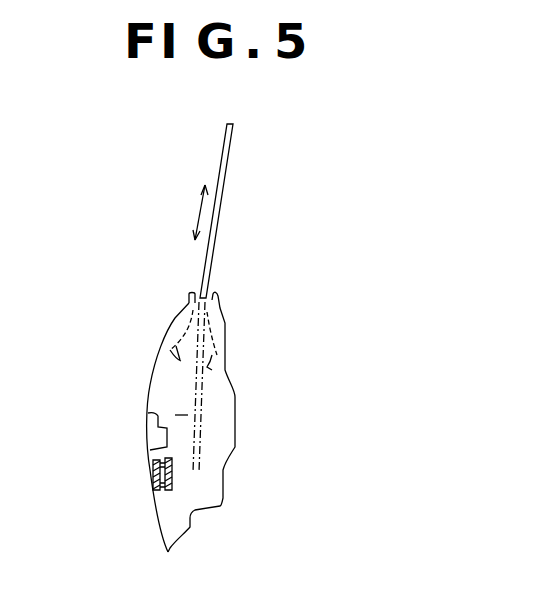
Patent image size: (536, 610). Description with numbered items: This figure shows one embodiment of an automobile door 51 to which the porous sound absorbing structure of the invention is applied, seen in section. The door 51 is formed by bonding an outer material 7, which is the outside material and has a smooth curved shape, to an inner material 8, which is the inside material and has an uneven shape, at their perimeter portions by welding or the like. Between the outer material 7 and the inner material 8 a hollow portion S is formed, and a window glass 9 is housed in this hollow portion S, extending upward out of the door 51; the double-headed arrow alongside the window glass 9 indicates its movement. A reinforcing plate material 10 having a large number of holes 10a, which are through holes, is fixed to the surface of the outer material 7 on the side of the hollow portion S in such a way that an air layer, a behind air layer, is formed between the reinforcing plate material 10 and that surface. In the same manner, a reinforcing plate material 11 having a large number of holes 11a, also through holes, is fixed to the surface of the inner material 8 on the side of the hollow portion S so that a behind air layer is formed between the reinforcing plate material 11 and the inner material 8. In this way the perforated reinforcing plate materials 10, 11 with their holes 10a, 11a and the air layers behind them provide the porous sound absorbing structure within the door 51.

The door 51 is at (331, 113).
The window glass 9 is at (221, 202).
The inner material 8 is at (235, 417).
The outer material 7 is at (148, 393).
The reinforcing plate material 10 is at (183, 328).
The holes 10a is at (172, 350).
The reinforcing plate material 11 is at (218, 328).
The holes 11a is at (210, 367).
The hollow portion S is at (182, 404).